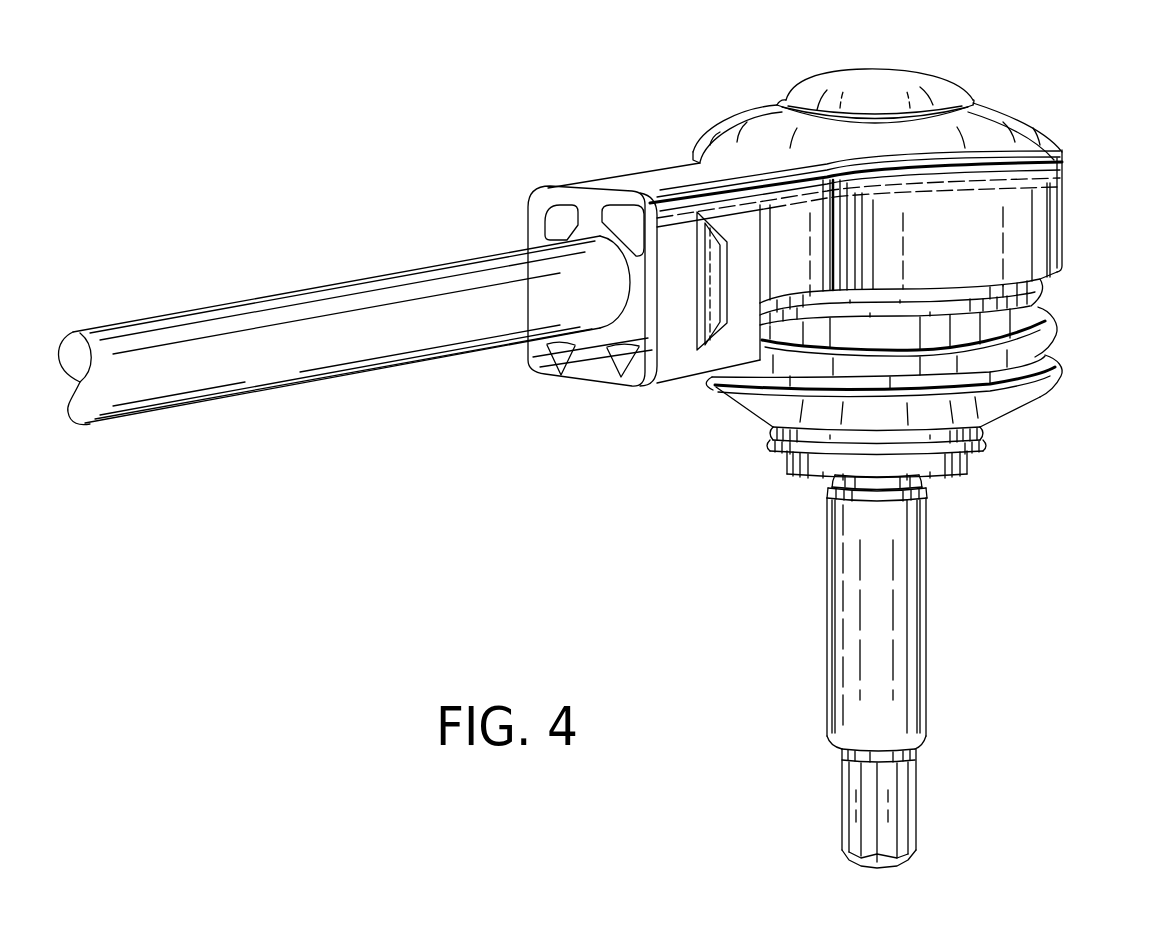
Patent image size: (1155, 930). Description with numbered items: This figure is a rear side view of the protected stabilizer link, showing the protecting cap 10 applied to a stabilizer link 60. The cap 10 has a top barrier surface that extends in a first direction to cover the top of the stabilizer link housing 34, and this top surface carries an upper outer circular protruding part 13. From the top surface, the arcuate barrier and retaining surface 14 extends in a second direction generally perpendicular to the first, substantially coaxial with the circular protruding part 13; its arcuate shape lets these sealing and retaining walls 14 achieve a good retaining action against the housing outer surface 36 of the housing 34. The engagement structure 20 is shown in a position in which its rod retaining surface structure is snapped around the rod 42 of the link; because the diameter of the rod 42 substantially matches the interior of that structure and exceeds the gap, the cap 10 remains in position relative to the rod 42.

The protecting cap 10 is at (907, 62).
The upper outer circular protruding part 13 is at (843, 90).
The barrier and retaining surface 14 is at (1065, 173).
The engagement structure 20 is at (626, 390).
The stabilizer link housing 34 is at (1060, 326).
The housing outer surface 36 is at (1044, 284).
The rod 42 is at (448, 274).
The stabilizer link 60 is at (740, 500).